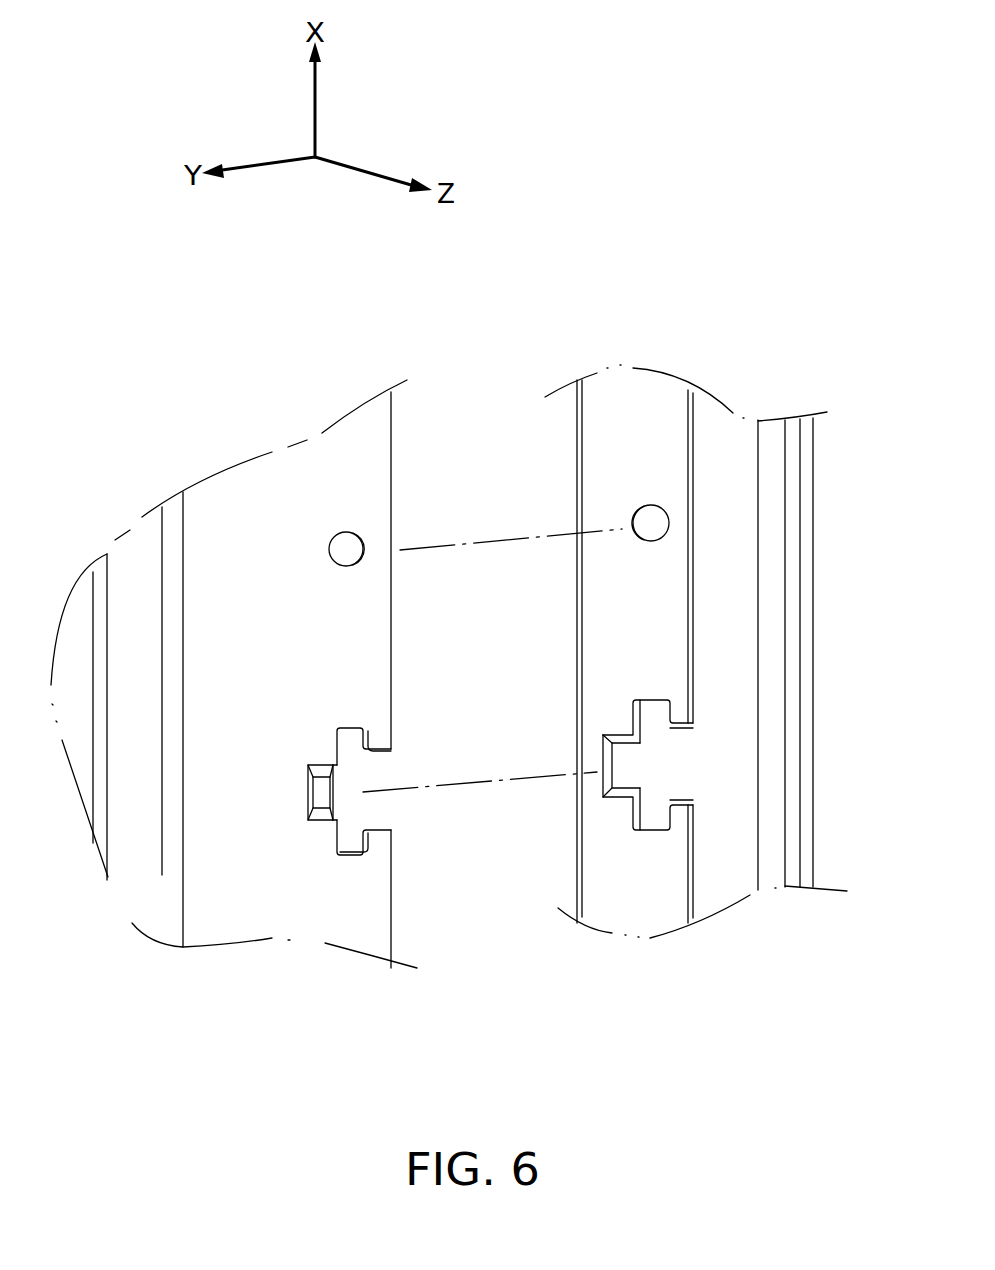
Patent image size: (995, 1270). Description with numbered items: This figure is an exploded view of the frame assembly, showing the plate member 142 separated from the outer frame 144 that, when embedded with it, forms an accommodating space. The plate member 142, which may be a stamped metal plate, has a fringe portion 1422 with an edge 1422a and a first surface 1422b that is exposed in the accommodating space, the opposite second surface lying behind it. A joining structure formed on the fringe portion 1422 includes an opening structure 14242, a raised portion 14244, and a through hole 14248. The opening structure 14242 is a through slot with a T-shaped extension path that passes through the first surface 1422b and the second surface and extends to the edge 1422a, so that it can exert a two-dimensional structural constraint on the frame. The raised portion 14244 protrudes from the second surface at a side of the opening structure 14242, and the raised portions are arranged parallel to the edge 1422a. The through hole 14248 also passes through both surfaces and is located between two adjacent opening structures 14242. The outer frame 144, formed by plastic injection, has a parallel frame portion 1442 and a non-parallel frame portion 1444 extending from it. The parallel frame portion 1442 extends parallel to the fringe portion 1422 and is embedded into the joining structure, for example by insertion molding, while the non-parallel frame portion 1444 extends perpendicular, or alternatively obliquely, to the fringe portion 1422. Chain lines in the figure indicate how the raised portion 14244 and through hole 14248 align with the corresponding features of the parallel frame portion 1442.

The plate member 142 is at (370, 682).
The fringe portion 1422 is at (242, 495).
The edge 1422a is at (392, 911).
The first surface 1422b is at (308, 687).
The opening structure 14242 is at (383, 807).
The raised portion 14244 is at (322, 802).
The through hole 14248 is at (350, 545).
The outer frame 144 is at (770, 233).
The parallel frame portion 1442 is at (630, 400).
The non-parallel frame portion 1444 is at (773, 442).